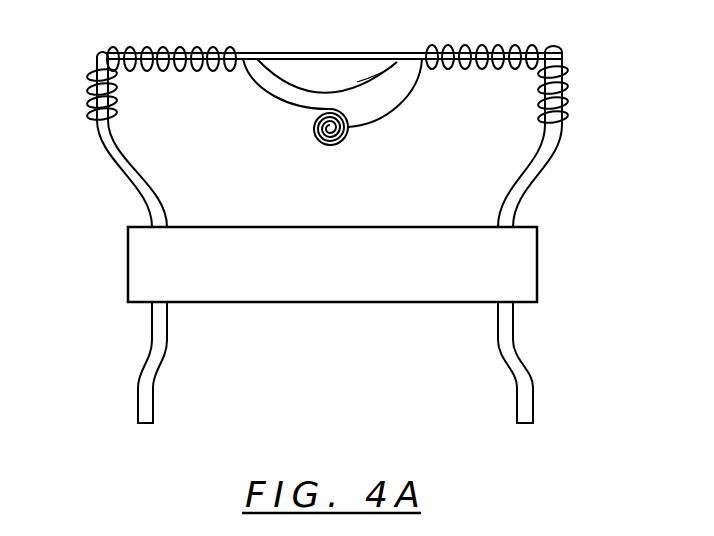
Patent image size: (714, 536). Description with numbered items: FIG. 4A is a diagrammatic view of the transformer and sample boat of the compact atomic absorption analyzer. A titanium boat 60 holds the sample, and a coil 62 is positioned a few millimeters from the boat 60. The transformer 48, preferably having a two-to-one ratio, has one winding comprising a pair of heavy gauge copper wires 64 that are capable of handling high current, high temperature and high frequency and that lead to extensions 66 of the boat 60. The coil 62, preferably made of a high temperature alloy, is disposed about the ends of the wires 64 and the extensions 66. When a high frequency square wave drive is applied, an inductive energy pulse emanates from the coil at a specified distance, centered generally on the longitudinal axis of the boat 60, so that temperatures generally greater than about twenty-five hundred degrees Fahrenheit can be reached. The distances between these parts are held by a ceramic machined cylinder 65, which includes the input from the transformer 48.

The transformer 48 is at (588, 51).
The boat 60 is at (287, 73).
The coil 62 is at (88, 115).
The heavy gauge copper wires 64 is at (147, 179).
The ceramic machined cylinder 65 is at (538, 265).
The extensions 66 is at (222, 73).